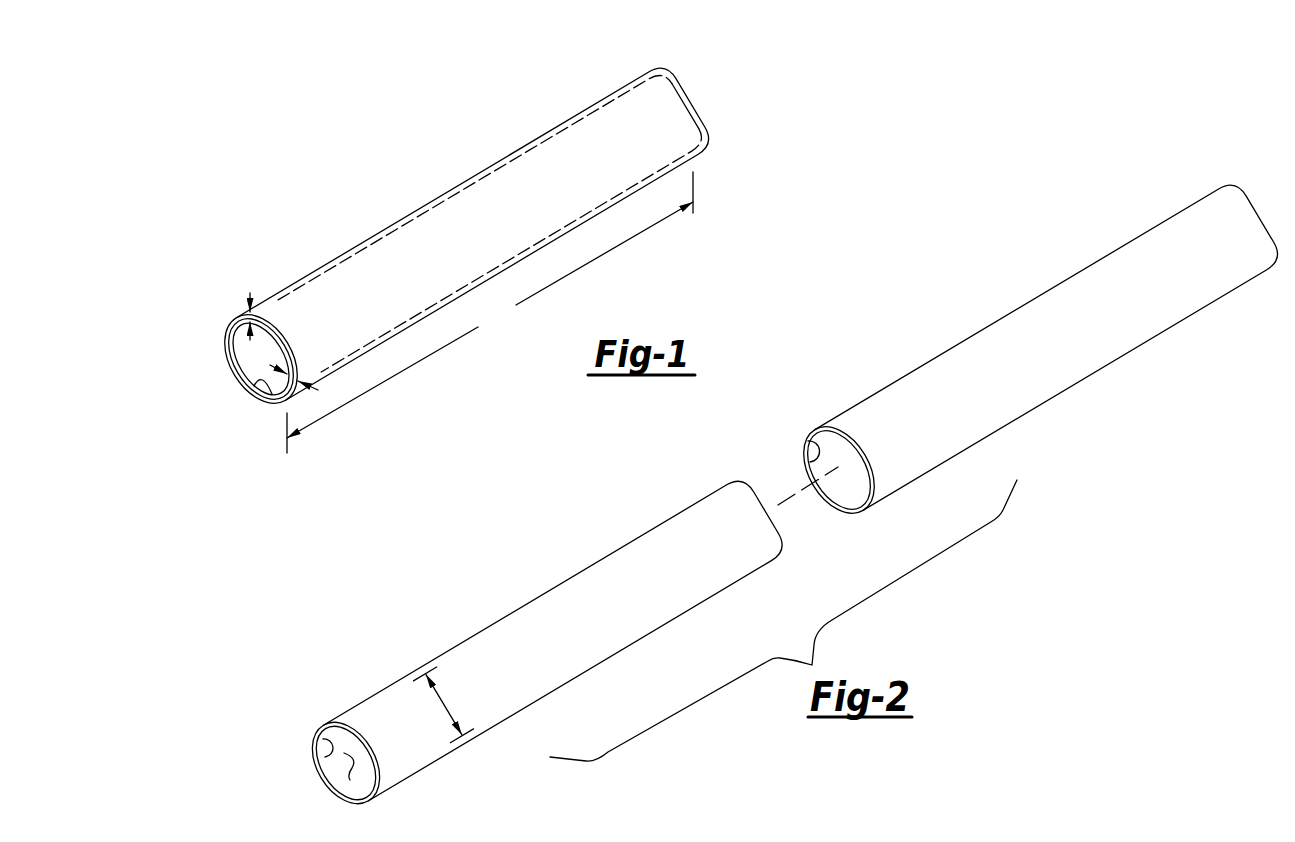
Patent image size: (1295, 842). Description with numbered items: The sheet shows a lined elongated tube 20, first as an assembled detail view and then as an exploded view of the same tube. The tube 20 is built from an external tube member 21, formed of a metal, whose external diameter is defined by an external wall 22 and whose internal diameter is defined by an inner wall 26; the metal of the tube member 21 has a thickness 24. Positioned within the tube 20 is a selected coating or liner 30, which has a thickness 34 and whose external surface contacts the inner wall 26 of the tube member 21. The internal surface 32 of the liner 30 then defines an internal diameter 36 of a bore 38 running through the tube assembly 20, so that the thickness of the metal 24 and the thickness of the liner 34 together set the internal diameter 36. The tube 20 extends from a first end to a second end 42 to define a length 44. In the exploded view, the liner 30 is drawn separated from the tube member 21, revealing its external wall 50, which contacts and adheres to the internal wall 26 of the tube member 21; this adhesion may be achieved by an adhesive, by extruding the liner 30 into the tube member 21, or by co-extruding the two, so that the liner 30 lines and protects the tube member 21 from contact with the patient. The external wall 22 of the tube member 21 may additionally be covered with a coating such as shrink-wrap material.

In FIG. 1, the elongated tube 20 is at (428, 395).
In FIG. 1, the external tube member 21 is at (466, 179).
In FIG. 2, the external tube member 21 is at (962, 336).
In FIG. 1, the external wall 22 is at (381, 257).
In FIG. 2, the external wall 22 is at (1118, 277).
In FIG. 1, the thickness 24 is at (249, 294).
In FIG. 1, the inner wall 26 is at (229, 336).
In FIG. 2, the inner wall 26 is at (813, 460).
In FIG. 1, the liner 30 is at (232, 366).
In FIG. 2, the liner 30 is at (444, 650).
In FIG. 1, the internal surface 32 is at (264, 384).
In FIG. 2, the internal surface 32 is at (327, 757).
In FIG. 1, the thickness 34 is at (270, 365).
In FIG. 2, the internal diameter 36 is at (443, 711).
In FIG. 2, the bore 38 is at (347, 768).
In FIG. 1, the second end 42 is at (707, 128).
In FIG. 1, the length 44 is at (490, 312).
In FIG. 2, the external wall 50 is at (572, 600).